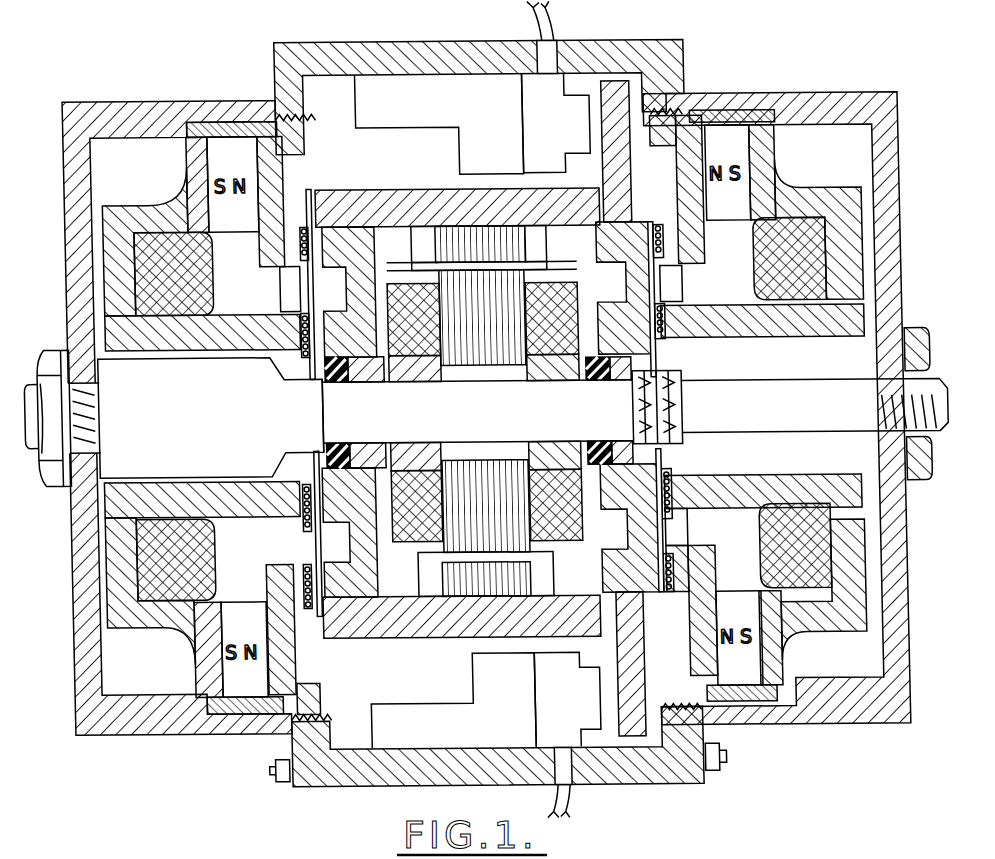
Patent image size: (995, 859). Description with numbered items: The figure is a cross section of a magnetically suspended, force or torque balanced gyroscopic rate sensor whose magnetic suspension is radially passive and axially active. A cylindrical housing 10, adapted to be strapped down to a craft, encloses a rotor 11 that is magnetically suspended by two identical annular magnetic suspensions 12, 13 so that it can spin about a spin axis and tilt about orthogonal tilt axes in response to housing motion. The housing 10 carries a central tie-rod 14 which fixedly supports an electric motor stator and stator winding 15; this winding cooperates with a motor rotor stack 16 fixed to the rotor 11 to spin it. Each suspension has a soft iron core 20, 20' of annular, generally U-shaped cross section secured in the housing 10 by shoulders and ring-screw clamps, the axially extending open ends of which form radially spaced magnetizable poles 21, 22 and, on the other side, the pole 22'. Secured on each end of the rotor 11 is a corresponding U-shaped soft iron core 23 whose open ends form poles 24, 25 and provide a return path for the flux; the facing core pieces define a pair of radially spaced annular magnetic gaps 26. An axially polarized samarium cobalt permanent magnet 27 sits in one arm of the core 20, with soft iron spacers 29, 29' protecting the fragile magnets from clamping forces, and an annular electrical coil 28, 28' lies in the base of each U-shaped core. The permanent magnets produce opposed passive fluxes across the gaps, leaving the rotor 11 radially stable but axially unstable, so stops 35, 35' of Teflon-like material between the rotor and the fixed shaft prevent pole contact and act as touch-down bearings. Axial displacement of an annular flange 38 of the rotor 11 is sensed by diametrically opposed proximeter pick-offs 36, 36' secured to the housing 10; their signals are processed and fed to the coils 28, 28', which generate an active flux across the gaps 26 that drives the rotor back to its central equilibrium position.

The cylindrical housing 10 is at (101, 100).
The rotor 11 is at (418, 638).
The magnetic suspension 12 is at (294, 293).
The magnetic suspension 13 is at (671, 289).
The central tie-rod 14 is at (486, 414).
The electric motor stator and stator winding 15 is at (511, 363).
The motor rotor stack 16 is at (457, 191).
The soft iron core 20 is at (100, 241).
The soft iron core 20' is at (819, 218).
The magnetizable pole 21 is at (303, 392).
The magnetizable pole 22 is at (210, 411).
The magnetizable pole 22' is at (763, 333).
The soft iron core 23 is at (331, 279).
The magnetizable pole 24 is at (426, 129).
The magnetizable pole 25 is at (358, 381).
The annular magnetic gap 26 is at (313, 606).
The annular permanent magnet 27 is at (199, 167).
The annular electrical coil 28 is at (115, 280).
The annular electrical coil 28' is at (844, 255).
The soft iron spacer 29 is at (231, 100).
The soft iron spacer 29' is at (731, 94).
The stop 35 is at (353, 398).
The stop 35' is at (602, 399).
The proximeter sensor 36 is at (523, 123).
The proximeter sensor 36' is at (546, 699).
The annular flange 38 is at (626, 82).